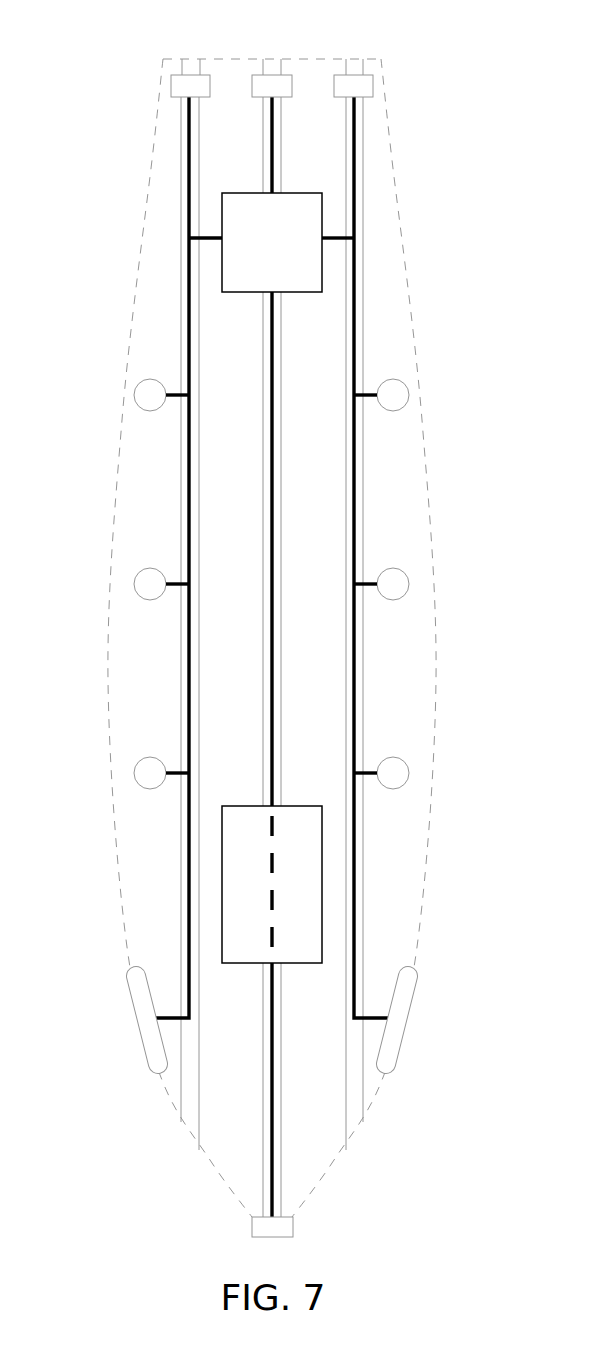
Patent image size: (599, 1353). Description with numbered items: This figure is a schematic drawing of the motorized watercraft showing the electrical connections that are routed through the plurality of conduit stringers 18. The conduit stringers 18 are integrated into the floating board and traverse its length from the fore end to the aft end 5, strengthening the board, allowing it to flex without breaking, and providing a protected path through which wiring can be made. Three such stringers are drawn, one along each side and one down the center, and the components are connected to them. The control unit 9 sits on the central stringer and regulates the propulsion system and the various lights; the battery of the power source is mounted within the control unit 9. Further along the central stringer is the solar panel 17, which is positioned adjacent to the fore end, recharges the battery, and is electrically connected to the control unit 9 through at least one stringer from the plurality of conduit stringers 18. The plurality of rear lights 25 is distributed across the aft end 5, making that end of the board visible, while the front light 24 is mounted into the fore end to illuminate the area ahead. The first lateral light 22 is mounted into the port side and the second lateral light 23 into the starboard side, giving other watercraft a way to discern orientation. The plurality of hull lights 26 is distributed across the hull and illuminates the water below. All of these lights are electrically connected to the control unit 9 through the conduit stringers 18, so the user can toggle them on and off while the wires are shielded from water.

The aft end 5 is at (241, 55).
The control unit 9 is at (253, 288).
The solar panel 17 is at (295, 808).
The plurality of conduit stringers 18 is at (276, 430).
The first lateral light 22 is at (416, 982).
The second lateral light 23 is at (128, 982).
The front light 24 is at (293, 1231).
The plurality of rear lights 25 is at (176, 79).
The plurality of hull lights 26 is at (136, 398).